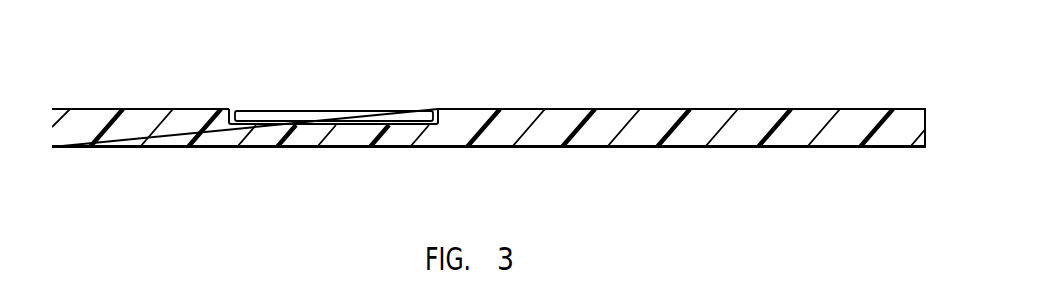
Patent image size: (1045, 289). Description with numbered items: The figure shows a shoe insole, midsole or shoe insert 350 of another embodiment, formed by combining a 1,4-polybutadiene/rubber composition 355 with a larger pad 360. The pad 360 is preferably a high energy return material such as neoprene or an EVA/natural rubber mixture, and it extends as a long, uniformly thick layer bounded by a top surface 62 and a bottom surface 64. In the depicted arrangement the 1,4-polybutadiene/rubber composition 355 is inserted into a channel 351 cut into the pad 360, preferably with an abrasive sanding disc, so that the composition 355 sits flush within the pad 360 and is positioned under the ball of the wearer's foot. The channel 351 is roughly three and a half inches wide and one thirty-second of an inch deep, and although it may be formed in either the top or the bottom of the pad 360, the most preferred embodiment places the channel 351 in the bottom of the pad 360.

The shoe insole, midsole or shoe insert 350 is at (715, 101).
The channel 351 is at (440, 117).
The 1,4-polybutadiene/rubber composition 355 is at (310, 117).
The pad 360 is at (603, 130).
The top surface 62 is at (875, 109).
The bottom surface 64 is at (866, 148).